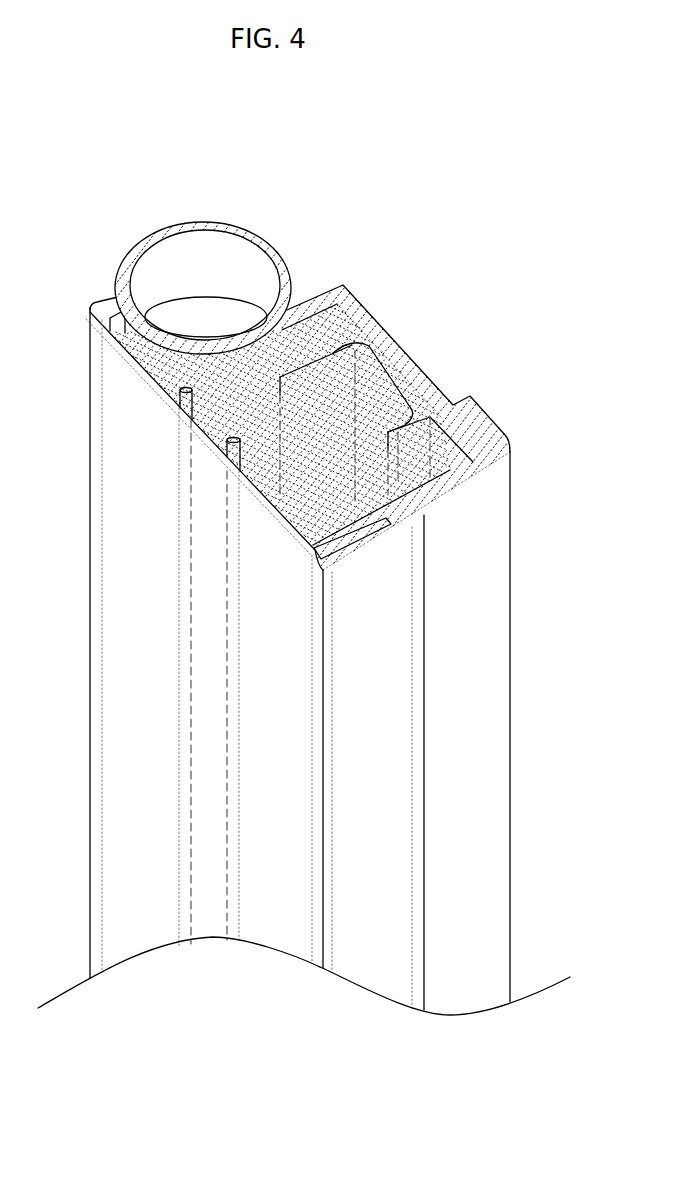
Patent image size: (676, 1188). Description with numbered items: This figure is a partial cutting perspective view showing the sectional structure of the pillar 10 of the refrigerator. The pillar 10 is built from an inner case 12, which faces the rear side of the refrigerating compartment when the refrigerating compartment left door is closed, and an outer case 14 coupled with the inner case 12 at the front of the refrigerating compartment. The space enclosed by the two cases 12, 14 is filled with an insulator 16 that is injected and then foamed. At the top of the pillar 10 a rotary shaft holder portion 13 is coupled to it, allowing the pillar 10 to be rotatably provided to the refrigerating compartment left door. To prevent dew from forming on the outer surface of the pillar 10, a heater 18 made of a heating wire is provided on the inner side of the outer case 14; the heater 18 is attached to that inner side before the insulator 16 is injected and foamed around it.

The pillar 10 is at (110, 233).
The inner case 12 is at (488, 523).
The rotary shaft holder portion 13 is at (208, 257).
The outer case 14 is at (135, 530).
The insulator 16 is at (317, 422).
The heater 18 is at (227, 443).